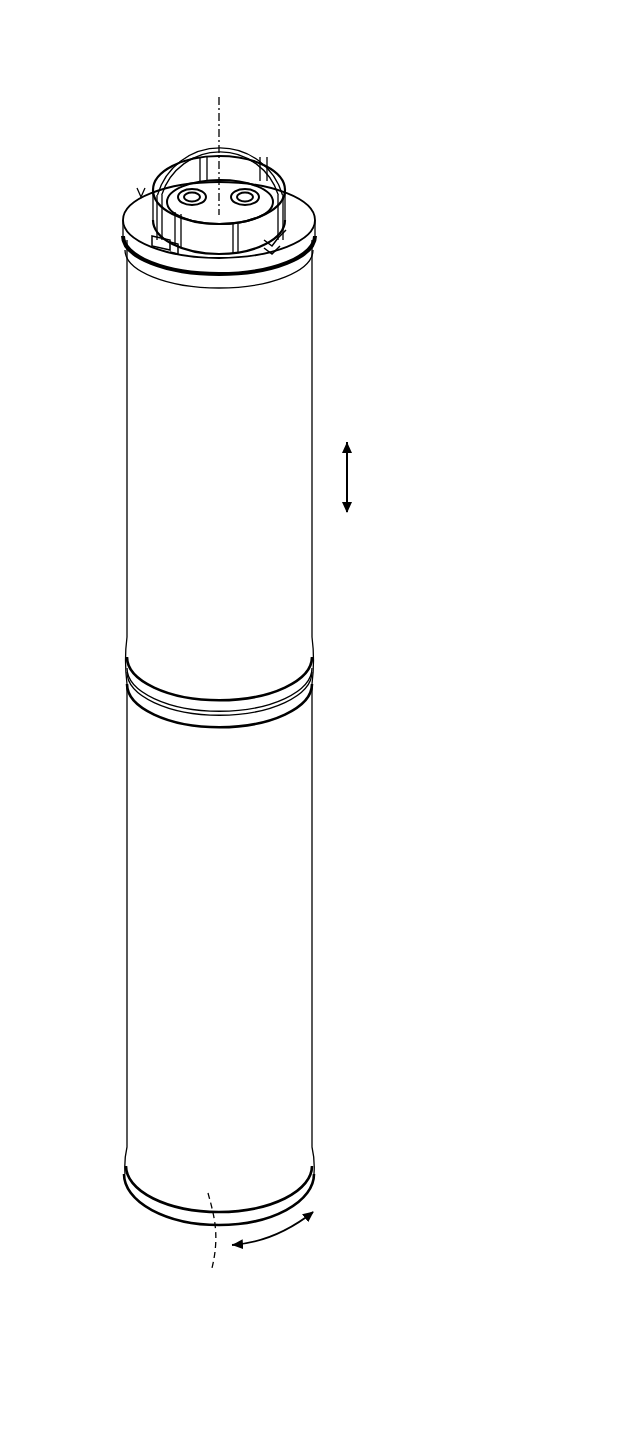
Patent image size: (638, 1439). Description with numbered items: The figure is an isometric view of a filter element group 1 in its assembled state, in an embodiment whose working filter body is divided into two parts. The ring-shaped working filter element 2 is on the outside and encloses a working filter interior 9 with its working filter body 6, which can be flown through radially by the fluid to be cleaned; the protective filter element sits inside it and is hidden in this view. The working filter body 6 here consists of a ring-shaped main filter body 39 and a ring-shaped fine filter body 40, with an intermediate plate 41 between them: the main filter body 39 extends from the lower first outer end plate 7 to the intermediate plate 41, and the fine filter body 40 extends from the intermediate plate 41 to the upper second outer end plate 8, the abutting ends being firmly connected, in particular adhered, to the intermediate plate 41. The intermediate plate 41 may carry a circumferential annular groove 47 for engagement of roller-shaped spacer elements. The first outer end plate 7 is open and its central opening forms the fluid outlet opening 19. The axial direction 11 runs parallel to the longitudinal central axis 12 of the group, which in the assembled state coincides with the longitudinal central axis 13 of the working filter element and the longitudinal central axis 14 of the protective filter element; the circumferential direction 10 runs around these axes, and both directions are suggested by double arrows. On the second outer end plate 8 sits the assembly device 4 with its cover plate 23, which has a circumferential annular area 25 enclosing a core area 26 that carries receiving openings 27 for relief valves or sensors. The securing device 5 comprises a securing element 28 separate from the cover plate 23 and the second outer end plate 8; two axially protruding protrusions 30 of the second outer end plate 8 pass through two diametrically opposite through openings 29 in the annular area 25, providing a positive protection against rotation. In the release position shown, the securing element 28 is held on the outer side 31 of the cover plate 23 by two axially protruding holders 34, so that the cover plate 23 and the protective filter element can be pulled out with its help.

The filter element group 1 is at (436, 140).
The working filter element 2 is at (318, 602).
The assembly device 4 is at (148, 165).
The securing device 5 is at (265, 116).
The working filter body 6 is at (220, 707).
The first outer end plate 7 is at (322, 1172).
The second outer end plate 8 is at (322, 248).
The working filter interior 9 is at (158, 470).
The circumferential direction 10 is at (278, 1236).
The axial direction 11 is at (348, 477).
The longitudinal central axis 12 is at (218, 113).
The longitudinal central axis 13 is at (218, 113).
The longitudinal central axis 14 is at (206, 98).
The fluid outlet opening 19 is at (208, 1244).
The cover plate 23 is at (312, 188).
The annular area 25 is at (307, 213).
The core area 26 is at (228, 190).
The receiving opening 27 is at (186, 194).
The securing element 28 is at (266, 128).
The through opening 29 is at (153, 237).
The protrusion 30 is at (150, 246).
The outer side 31 is at (140, 193).
The holder 34 is at (287, 258).
The main filter body 39 is at (197, 898).
The fine filter body 40 is at (197, 493).
The intermediate plate 41 is at (120, 655).
The annular groove 47 is at (153, 703).